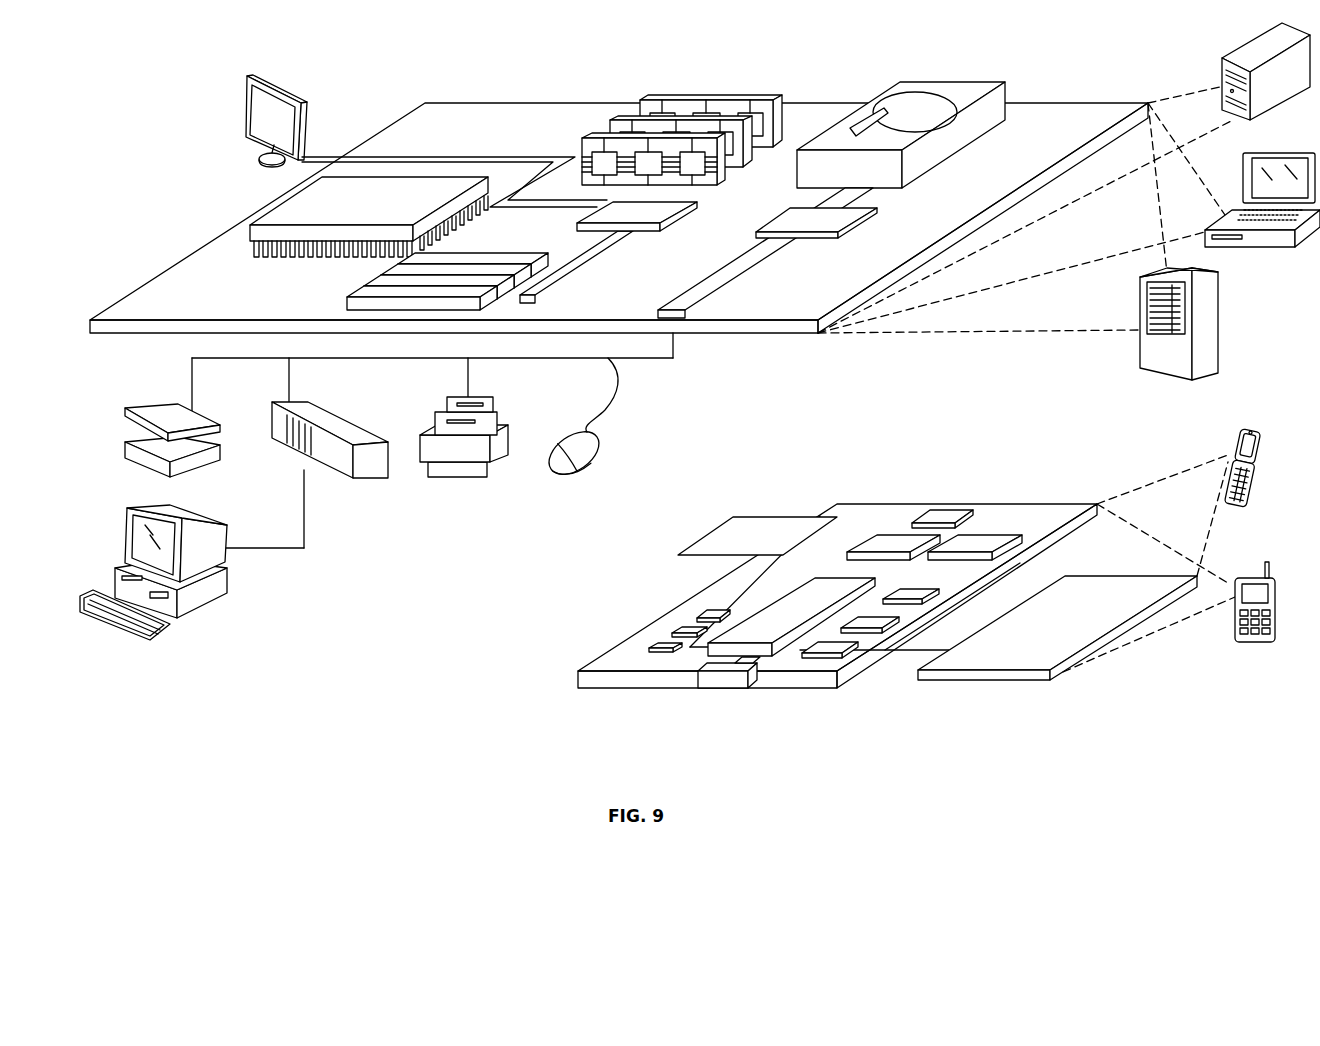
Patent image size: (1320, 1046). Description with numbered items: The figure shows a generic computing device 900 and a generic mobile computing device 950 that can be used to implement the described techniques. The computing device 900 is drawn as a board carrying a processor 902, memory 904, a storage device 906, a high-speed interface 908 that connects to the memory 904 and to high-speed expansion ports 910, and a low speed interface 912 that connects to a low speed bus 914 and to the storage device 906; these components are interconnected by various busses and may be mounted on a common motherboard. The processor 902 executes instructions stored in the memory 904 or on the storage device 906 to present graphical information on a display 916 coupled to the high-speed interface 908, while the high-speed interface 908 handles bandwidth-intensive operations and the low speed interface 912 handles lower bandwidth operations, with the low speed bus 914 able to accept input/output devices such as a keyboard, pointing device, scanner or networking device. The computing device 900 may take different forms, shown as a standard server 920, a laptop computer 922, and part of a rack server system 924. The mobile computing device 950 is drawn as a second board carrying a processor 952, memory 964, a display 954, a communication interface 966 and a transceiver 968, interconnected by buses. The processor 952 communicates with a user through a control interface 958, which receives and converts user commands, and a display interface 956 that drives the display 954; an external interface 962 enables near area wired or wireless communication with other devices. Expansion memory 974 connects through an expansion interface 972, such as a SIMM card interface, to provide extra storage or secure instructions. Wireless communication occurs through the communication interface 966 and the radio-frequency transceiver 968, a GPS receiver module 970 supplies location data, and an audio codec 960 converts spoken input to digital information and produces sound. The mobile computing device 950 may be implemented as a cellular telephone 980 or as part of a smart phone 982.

The computing device 900 is at (377, 50).
The processor 902 is at (273, 207).
The memory 904 is at (713, 97).
The storage device 906 is at (943, 82).
The high-speed interface 908 is at (648, 208).
The high-speed expansion ports 910 is at (373, 283).
The low speed interface 912 is at (788, 215).
The low speed bus 914 is at (680, 310).
The display 916 is at (253, 72).
The standard server 920 is at (1244, 52).
The laptop computer 922 is at (1296, 150).
The rack server system 924 is at (1220, 322).
The mobile computer device 950 is at (530, 693).
The processor 952 is at (763, 620).
The display 954 is at (1095, 590).
The display interface 956 is at (835, 648).
The control interface 958 is at (880, 618).
The audio codec 960 is at (917, 592).
The external interface 962 is at (723, 677).
The memory 964 is at (680, 627).
The communication interface 966 is at (893, 537).
The transceiver 968 is at (982, 538).
The GPS receiver module 970 is at (943, 513).
The expansion interface 972 is at (818, 517).
The expansion memory 974 is at (737, 517).
The cellular telephone 980 is at (1240, 430).
The smart phone 982 is at (1250, 578).